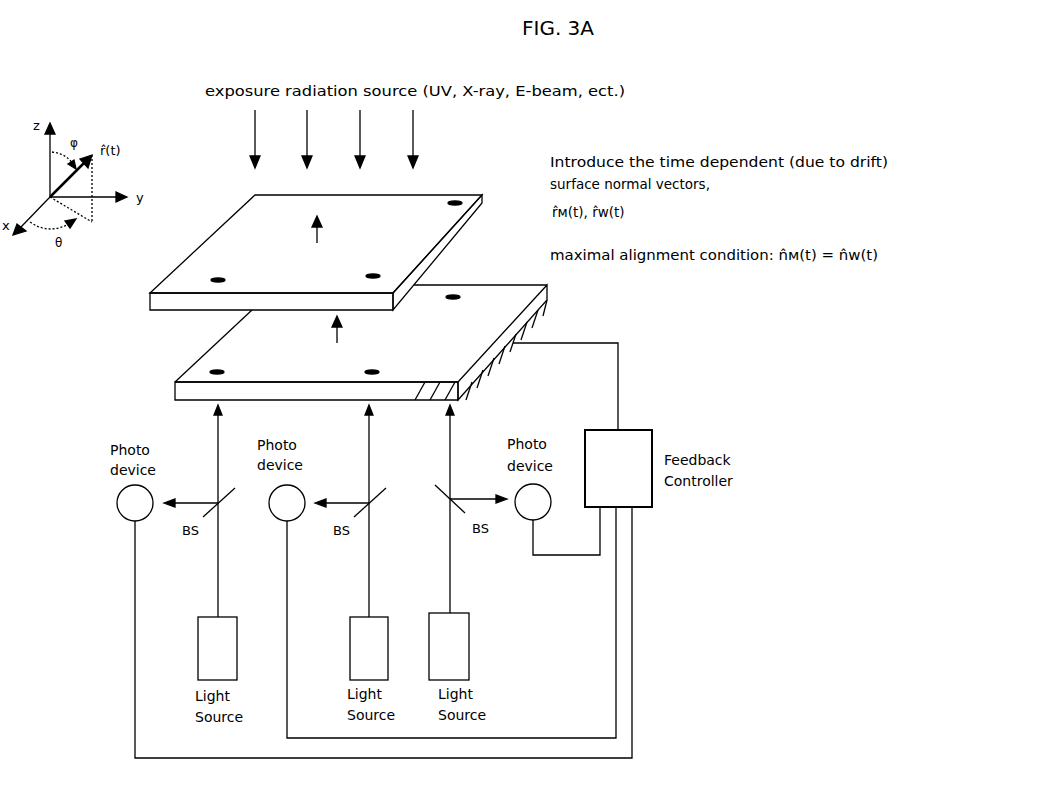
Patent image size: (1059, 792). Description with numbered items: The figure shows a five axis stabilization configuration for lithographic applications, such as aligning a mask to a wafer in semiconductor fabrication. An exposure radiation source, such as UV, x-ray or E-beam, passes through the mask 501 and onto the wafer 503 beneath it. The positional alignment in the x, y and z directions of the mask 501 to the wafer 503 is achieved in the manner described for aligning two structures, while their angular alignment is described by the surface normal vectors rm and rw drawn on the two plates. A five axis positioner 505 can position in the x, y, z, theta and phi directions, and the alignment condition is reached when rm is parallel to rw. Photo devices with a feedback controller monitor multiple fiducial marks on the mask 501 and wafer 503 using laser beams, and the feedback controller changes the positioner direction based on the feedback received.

The mask 501 is at (215, 232).
The wafer 503 is at (195, 363).
The 5 axis positioner 505 is at (535, 309).